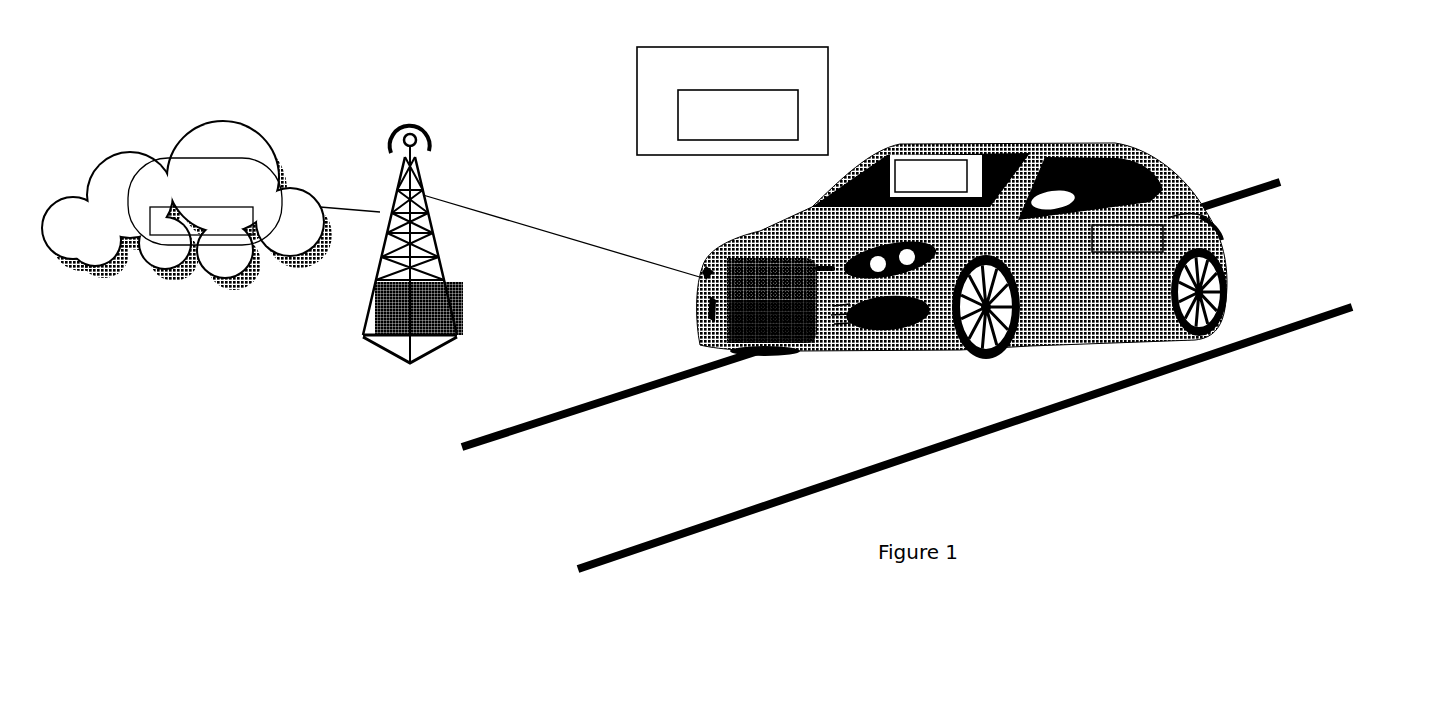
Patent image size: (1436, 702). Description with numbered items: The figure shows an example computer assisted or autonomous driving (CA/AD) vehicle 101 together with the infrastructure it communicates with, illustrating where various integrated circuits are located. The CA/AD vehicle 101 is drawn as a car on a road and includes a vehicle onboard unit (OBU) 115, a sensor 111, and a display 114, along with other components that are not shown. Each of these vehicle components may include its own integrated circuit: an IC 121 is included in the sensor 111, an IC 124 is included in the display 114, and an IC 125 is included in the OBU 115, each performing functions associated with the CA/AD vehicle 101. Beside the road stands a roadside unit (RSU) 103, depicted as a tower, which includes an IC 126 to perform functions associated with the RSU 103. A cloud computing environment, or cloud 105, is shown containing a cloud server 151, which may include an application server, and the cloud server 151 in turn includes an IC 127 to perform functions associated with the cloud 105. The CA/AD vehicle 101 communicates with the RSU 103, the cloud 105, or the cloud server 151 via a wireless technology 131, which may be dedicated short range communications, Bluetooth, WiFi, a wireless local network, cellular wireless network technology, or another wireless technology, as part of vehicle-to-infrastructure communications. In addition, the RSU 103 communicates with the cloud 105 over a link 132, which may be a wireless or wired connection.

The CA/AD vehicle 101 is at (1100, 292).
The roadside unit 103 is at (374, 247).
The cloud computing environment 105 is at (187, 206).
The sensor 111 is at (1168, 218).
The display 114 is at (982, 158).
The vehicle onboard unit 115 is at (768, 260).
The IC 121 is at (1127, 238).
The IC 124 is at (936, 176).
The IC 125 is at (738, 115).
The IC 126 is at (392, 333).
The IC 127 is at (201, 221).
The wireless technology 131 is at (563, 232).
The link 132 is at (347, 179).
The cloud server 151 is at (205, 201).